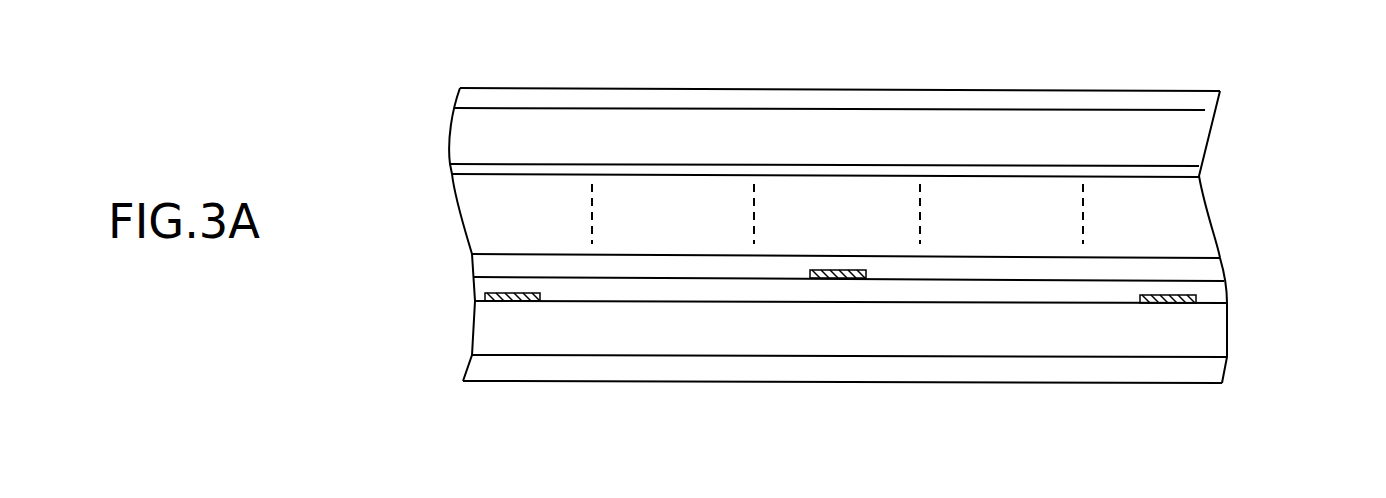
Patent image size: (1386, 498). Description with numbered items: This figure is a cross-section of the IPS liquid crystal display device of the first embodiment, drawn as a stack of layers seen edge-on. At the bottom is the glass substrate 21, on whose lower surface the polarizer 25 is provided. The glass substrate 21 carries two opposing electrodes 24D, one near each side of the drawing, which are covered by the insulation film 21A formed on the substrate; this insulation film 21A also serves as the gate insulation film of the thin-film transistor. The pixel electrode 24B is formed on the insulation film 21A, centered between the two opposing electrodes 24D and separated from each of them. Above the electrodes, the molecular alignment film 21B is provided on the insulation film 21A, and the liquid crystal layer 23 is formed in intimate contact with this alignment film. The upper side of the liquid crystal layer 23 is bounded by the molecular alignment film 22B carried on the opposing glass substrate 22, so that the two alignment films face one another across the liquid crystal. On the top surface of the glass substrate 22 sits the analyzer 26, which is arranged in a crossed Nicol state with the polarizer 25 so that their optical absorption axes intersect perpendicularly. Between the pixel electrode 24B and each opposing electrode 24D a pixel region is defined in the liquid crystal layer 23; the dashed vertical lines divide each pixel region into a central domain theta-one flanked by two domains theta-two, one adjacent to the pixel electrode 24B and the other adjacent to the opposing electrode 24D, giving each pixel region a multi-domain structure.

The analyzer 26 is at (1148, 103).
The glass substrate 22 is at (1180, 139).
The molecular alignment film 22B is at (483, 169).
The liquid crystal layer 23 is at (1222, 175).
The molecular alignment film 21B is at (1212, 270).
The insulation film 21A is at (1212, 296).
The glass substrate 21 is at (1213, 331).
The polarizer 25 is at (1213, 371).
The opposing electrode 24D is at (530, 301).
The pixel electrode 24B is at (857, 280).